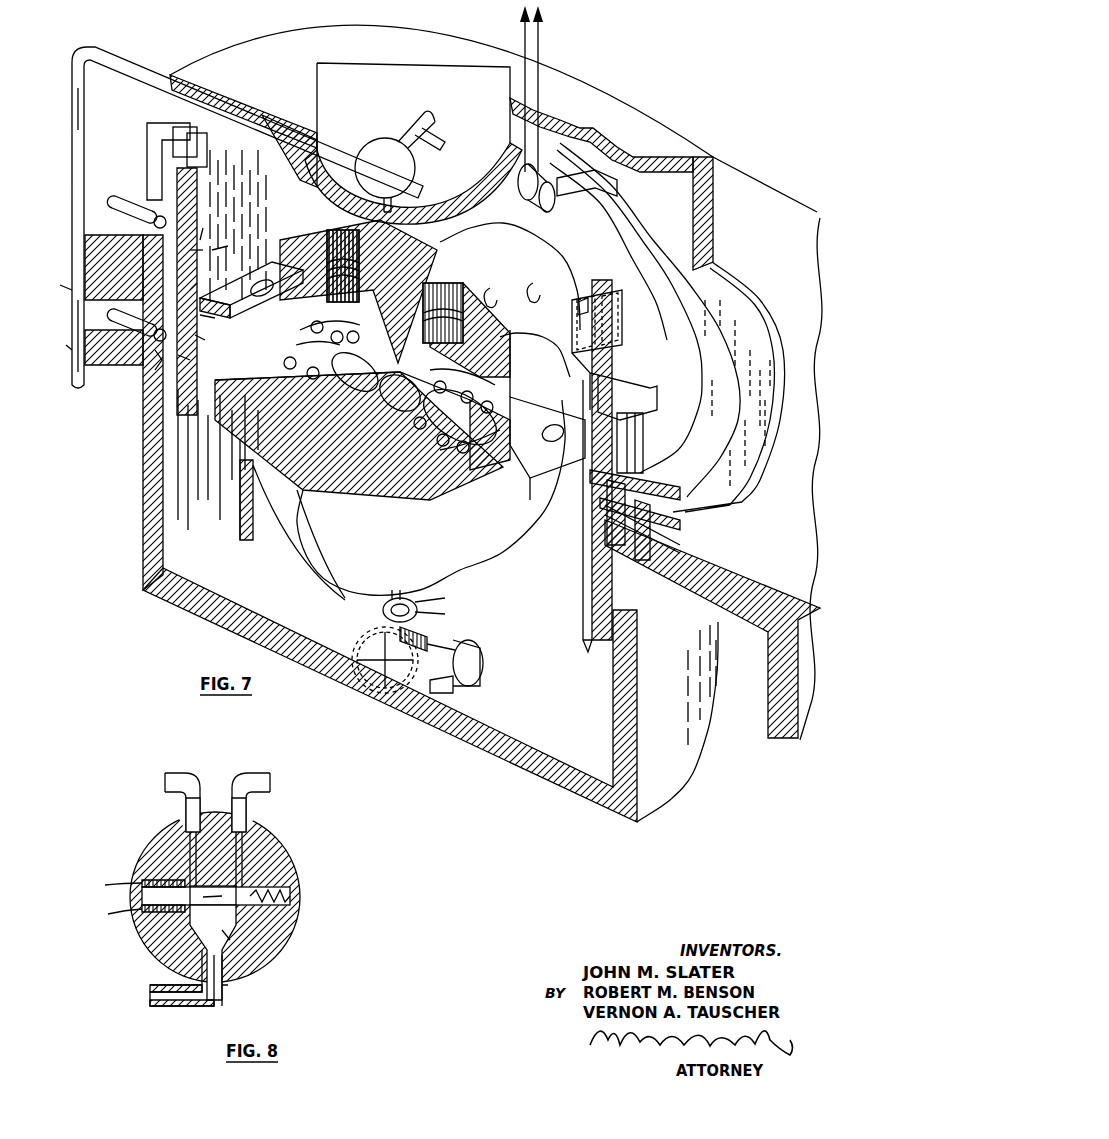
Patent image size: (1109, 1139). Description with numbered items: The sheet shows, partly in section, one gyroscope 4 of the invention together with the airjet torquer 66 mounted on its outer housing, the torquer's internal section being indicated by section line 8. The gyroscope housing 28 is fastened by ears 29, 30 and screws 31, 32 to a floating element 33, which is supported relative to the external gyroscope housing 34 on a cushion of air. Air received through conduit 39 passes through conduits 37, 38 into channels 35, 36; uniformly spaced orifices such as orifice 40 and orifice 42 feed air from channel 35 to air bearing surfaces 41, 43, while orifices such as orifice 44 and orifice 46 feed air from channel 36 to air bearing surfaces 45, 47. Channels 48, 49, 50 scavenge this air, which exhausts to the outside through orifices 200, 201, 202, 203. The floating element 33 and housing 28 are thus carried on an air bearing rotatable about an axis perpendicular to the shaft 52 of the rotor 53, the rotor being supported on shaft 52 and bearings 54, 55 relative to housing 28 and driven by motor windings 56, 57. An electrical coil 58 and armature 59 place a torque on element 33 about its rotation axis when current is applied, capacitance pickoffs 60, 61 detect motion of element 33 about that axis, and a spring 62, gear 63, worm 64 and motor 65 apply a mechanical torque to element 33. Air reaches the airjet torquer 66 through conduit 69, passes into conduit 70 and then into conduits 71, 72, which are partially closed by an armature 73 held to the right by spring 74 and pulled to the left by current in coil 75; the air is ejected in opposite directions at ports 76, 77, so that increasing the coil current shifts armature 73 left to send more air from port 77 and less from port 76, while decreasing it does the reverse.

In FIG. 7, the gyroscope 4 is at (698, 57).
In FIG. 7, the section line of Fig. 8 is at (345, 114).
In FIG. 7, the gyroscope housing 28 is at (494, 553).
In FIG. 7, the ear 29 is at (261, 280).
In FIG. 7, the ear 30 is at (552, 470).
In FIG. 7, the screw 31 is at (260, 288).
In FIG. 7, the screw 32 is at (549, 424).
In FIG. 7, the floating element 33 is at (588, 492).
In FIG. 7, the external gyroscope housing 34 is at (625, 108).
In FIG. 7, the channel 35 is at (628, 440).
In FIG. 7, the channel 36 is at (157, 355).
In FIG. 7, the conduit 37 is at (103, 198).
In FIG. 7, the conduit 38 is at (118, 325).
In FIG. 7, the conduit 39 is at (72, 350).
In FIG. 7, the orifice 40 is at (221, 282).
In FIG. 7, the air bearing surface 41 is at (212, 227).
In FIG. 7, the orifice 42 is at (204, 243).
In FIG. 7, the air bearing surface 43 is at (228, 238).
In FIG. 7, the orifice 44 is at (141, 340).
In FIG. 7, the air bearing surface 45 is at (55, 295).
In FIG. 7, the orifice 46 is at (183, 356).
In FIG. 7, the air bearing surface 47 is at (210, 345).
In FIG. 7, the channel 48 is at (205, 276).
In FIG. 7, the channel 49 is at (211, 325).
In FIG. 7, the channel 50 is at (114, 300).
In FIG. 7, the shaft 52 is at (467, 448).
In FIG. 7, the rotor 53 is at (320, 470).
In FIG. 7, the bearing 54 is at (446, 447).
In FIG. 7, the bearing 55 is at (290, 352).
In FIG. 7, the motor winding 56 is at (478, 318).
In FIG. 7, the motor winding 57 is at (340, 272).
In FIG. 7, the electrical coil 58 is at (545, 204).
In FIG. 7, the armature 59 is at (587, 190).
In FIG. 7, the capacitance pickoff 60 is at (160, 137).
In FIG. 7, the capacitance pickoff 61 is at (607, 294).
In FIG. 7, the spring 62 is at (382, 609).
In FIG. 7, the gear 63 is at (368, 655).
In FIG. 7, the worm 64 is at (415, 634).
In FIG. 7, the motor 65 is at (478, 682).
In FIG. 7, the airjet torquer 66 is at (403, 150).
In FIG. 8, the airjet torquer 66 is at (262, 834).
In FIG. 7, the conduit 69 is at (266, 146).
In FIG. 8, the conduit 69 is at (178, 1005).
In FIG. 8, the conduit 70 is at (224, 990).
In FIG. 8, the conduit 71 is at (190, 935).
In FIG. 8, the conduit 72 is at (240, 930).
In FIG. 8, the armature 73 is at (207, 893).
In FIG. 8, the spring 74 is at (291, 887).
In FIG. 8, the coil 75 is at (152, 876).
In FIG. 8, the port 76 is at (166, 782).
In FIG. 8, the port 77 is at (268, 782).
In FIG. 7, the orifice 200 is at (658, 490).
In FIG. 7, the orifice 201 is at (682, 534).
In FIG. 7, the orifice 202 is at (682, 510).
In FIG. 7, the orifice 203 is at (660, 590).